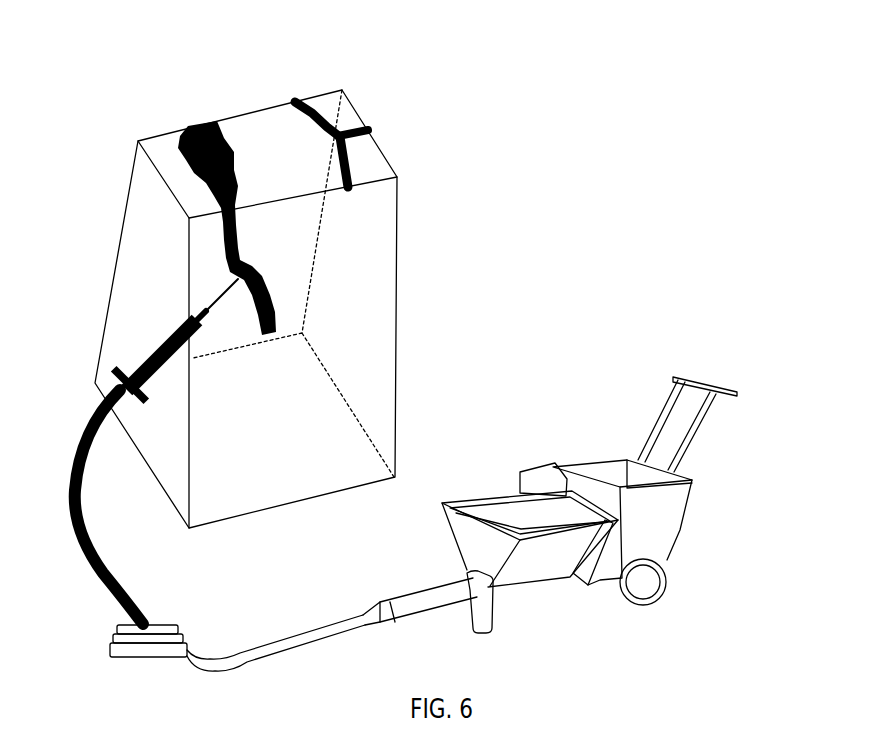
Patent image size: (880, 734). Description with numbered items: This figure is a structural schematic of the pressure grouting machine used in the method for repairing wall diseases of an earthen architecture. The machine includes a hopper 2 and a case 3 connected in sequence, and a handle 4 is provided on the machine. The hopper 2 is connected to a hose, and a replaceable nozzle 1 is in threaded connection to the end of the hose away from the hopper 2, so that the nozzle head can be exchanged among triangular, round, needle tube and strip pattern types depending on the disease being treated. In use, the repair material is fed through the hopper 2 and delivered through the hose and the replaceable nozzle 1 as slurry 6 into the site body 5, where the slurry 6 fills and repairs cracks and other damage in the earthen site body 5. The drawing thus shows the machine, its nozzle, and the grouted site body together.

The replaceable nozzle 1 is at (178, 326).
The hopper 2 is at (562, 517).
The case 3 is at (687, 520).
The handle 4 is at (707, 378).
The site body 5 is at (363, 262).
The slurry 6 is at (196, 127).